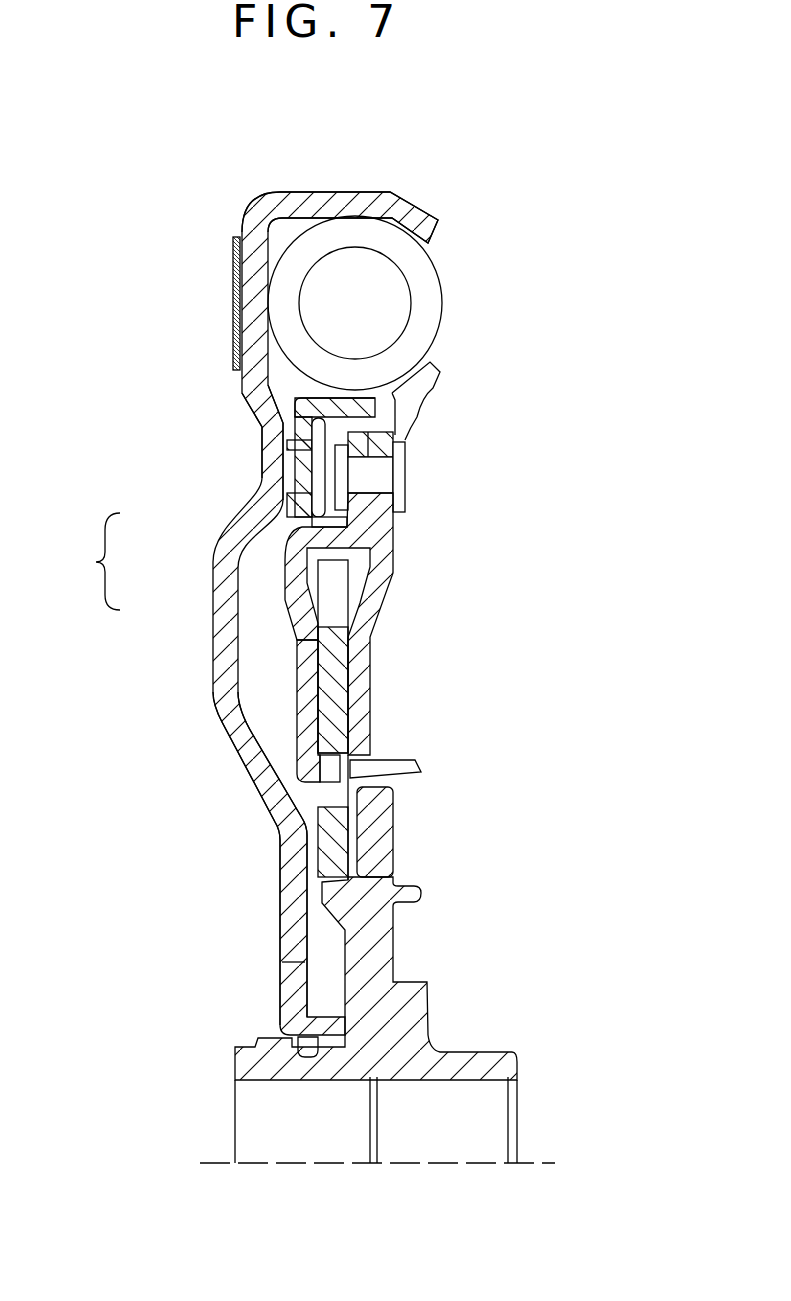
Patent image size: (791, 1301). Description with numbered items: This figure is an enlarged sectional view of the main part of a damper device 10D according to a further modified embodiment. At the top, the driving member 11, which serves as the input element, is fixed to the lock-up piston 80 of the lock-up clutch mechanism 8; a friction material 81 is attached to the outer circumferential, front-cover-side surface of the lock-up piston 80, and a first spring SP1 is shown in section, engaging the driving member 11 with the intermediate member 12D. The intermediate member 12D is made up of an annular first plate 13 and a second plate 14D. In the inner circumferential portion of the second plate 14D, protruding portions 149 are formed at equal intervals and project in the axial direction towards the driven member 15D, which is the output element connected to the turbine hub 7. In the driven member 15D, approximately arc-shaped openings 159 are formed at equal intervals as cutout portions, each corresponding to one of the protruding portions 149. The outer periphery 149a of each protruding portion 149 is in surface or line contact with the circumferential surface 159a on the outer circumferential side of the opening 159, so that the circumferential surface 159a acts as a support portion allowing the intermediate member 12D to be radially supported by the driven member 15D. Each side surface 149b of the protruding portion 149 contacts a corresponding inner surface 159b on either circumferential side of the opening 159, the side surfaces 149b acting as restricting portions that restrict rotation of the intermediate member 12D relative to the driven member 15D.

The damper device 10D is at (224, 207).
The first spring SP1 is at (427, 297).
The friction material 81 is at (238, 300).
The driving member 11 is at (295, 395).
The lock-up clutch mechanism 8 is at (250, 425).
The lock-up piston 80 is at (267, 480).
The intermediate member 12D is at (77, 561).
The second plate 14D is at (300, 532).
The first plate 13 is at (375, 542).
The driven member 15D is at (323, 640).
The protruding portion 149 is at (295, 767).
The outer periphery 149a is at (330, 768).
The opening 159 is at (283, 802).
The circumferential surface 159a is at (360, 763).
The side surface 149b is at (300, 792).
The inner surface 159b is at (375, 792).
The turbine hub 7 is at (385, 953).